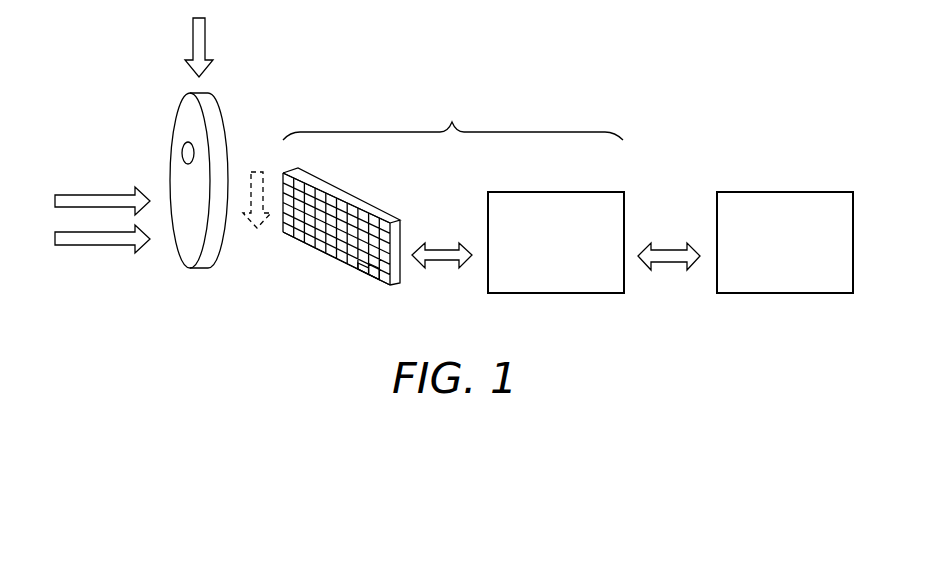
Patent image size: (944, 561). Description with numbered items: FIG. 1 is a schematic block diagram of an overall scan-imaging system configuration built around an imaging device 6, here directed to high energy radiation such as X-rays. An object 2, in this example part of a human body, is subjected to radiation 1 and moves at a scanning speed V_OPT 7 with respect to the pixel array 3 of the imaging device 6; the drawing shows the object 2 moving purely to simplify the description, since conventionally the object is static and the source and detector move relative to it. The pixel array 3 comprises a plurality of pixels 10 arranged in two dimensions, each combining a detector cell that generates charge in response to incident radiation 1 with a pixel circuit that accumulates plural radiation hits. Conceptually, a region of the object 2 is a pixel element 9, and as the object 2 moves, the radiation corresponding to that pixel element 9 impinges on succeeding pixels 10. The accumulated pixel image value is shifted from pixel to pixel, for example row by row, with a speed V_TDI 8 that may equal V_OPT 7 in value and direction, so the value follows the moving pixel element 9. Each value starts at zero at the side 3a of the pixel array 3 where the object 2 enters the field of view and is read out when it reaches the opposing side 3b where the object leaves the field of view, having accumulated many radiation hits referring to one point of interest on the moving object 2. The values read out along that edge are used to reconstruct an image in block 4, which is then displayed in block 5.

The radiation 1 is at (96, 195).
The object 2 is at (222, 112).
The pixel array 3 is at (377, 212).
The side of the pixel array 3a is at (333, 185).
The opposing side of the pixel array 3b is at (317, 258).
The image reconstruction 4 is at (488, 192).
The display 5 is at (717, 192).
The imaging device 6 is at (453, 119).
The scanning speed V_OPT 7 is at (206, 39).
The speed V_TDI 8 is at (263, 235).
The pixel element 9 is at (182, 153).
The pixels 10 is at (363, 268).